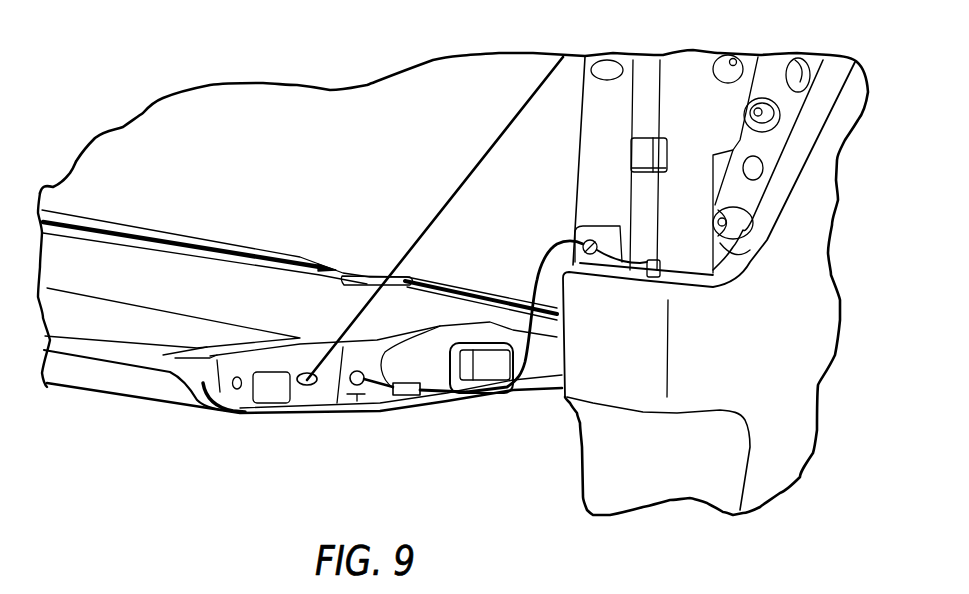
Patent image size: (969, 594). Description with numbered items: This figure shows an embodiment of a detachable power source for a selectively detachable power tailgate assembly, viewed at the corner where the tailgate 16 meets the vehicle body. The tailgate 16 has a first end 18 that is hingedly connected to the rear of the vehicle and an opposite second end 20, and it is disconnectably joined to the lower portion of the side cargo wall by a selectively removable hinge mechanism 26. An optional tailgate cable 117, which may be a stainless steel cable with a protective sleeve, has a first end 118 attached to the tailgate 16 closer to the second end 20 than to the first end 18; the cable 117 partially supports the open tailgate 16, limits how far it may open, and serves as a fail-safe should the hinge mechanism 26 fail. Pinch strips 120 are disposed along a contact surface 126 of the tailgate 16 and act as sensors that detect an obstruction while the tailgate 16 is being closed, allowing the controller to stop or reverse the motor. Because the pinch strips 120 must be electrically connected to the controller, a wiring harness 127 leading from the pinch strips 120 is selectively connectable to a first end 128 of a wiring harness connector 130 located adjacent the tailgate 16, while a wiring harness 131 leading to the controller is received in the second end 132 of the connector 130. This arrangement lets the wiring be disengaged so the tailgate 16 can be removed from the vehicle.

The tailgate 16 is at (180, 295).
The first end 18 is at (213, 251).
The second end 20 is at (136, 403).
The hinge mechanism 26 is at (527, 401).
The tailgate cable 117 is at (480, 152).
The first end 118 is at (307, 388).
The pinch strips 120 is at (112, 224).
The contact surface 126 is at (360, 400).
The wiring harness 127 is at (438, 330).
The first end 128 is at (397, 395).
The wiring harness connector 130 is at (413, 396).
The wiring harness 131 is at (470, 400).
The second end 132 is at (447, 394).